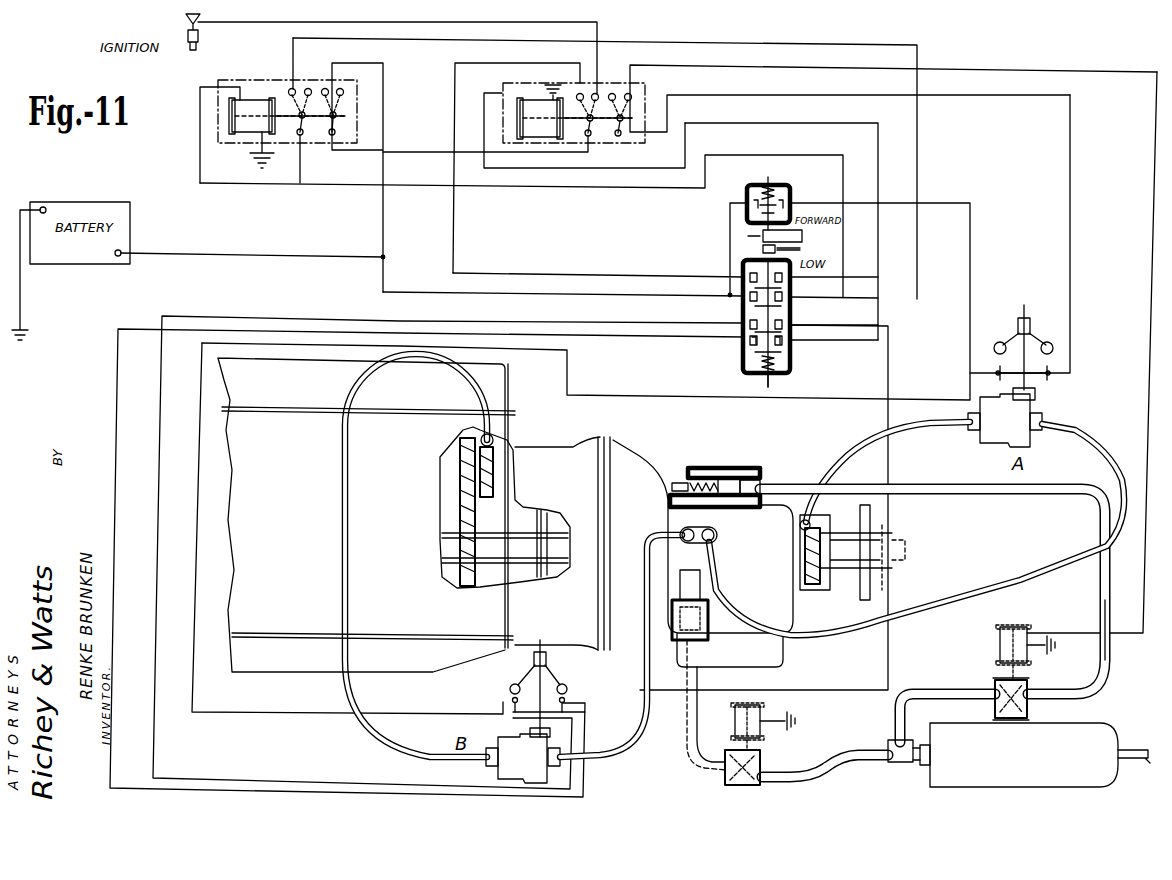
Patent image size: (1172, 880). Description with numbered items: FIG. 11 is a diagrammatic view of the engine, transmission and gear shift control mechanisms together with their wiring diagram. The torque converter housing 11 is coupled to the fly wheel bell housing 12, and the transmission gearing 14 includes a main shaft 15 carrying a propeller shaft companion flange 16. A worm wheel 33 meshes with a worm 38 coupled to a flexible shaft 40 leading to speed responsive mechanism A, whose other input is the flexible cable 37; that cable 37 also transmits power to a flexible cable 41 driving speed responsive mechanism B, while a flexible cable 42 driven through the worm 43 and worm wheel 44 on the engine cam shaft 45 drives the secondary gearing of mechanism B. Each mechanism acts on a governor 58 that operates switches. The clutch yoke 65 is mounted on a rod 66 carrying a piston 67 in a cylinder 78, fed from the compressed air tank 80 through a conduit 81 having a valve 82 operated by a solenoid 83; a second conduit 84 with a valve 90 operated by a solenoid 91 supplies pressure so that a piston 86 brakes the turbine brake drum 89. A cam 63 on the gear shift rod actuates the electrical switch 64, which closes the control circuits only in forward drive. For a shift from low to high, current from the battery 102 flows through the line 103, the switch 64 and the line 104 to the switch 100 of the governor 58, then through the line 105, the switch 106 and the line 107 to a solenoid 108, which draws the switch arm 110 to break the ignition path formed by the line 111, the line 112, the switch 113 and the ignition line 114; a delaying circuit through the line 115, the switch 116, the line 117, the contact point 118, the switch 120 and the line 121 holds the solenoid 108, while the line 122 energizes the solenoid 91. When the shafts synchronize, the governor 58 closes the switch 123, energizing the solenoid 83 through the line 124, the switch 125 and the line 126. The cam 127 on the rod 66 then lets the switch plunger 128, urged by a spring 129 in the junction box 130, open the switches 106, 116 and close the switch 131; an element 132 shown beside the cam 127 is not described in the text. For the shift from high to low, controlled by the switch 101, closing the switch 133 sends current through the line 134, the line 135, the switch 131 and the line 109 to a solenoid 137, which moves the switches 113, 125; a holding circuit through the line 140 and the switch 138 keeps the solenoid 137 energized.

The battery 102 is at (66, 202).
The line 103 is at (248, 255).
The line 104 is at (966, 262).
The line 105 is at (152, 393).
The switch 106 is at (742, 323).
The line 107 is at (648, 190).
The solenoid 108 is at (215, 130).
The line 109 is at (872, 223).
The switch arm 110 is at (342, 96).
The line 111 is at (382, 218).
The line 112 is at (394, 149).
The switch 113 is at (592, 137).
The ignition line 114 is at (600, 42).
The line 115 is at (487, 305).
The switch 116 is at (790, 300).
The line 117 is at (787, 43).
The contact point 118 is at (294, 88).
The switch 120 is at (272, 150).
The line 121 is at (300, 160).
The line 122 is at (890, 350).
The switch 123 is at (1052, 373).
The line 124 is at (1065, 208).
The switch 125 is at (632, 112).
The line 126 is at (1140, 290).
The cam 127 is at (760, 249).
The switch plunger 128 is at (772, 382).
The spring 129 is at (758, 366).
The junction box 130 is at (792, 347).
The switch 131 is at (749, 343).
The rod 132 is at (690, 482).
The switch 133 is at (566, 700).
The line 134 is at (500, 703).
The line 135 is at (112, 485).
The solenoid 137 is at (520, 100).
The switch 138 is at (724, 278).
The line 140 is at (562, 276).
The cam 63 is at (762, 234).
The electrical switch 64 is at (792, 196).
The rod 66 is at (804, 250).
The governor 58 is at (1036, 328).
The flexible shaft 40 is at (895, 435).
The worm 43 is at (497, 440).
The fly wheel bell housing 12 is at (560, 442).
The housing 11 is at (622, 456).
The yoke 65 is at (722, 466).
The cylinder 78 is at (724, 478).
The piston 67 is at (745, 470).
The transmission gearing 14 is at (790, 485).
The engine cam shaft 45 is at (455, 470).
The worm wheel 44 is at (498, 470).
The flexible cable 42 is at (350, 553).
The worm 38 is at (800, 525).
The worm wheel 33 is at (800, 549).
The main shaft 15 is at (800, 563).
The propeller shaft companion flange 16 is at (852, 597).
The flexible cable 37 is at (1025, 585).
The brake drum 89 is at (700, 572).
The piston 86 is at (674, 620).
The solenoid 83 is at (1000, 640).
The conduit 81 is at (1100, 675).
The valve 82 is at (1029, 708).
The second conduit 84 is at (828, 768).
The compressed air tank 80 is at (1000, 787).
The solenoid 91 is at (730, 700).
The valve 90 is at (726, 775).
The flexible cable 41 is at (608, 745).
The switch 100 is at (568, 708).
The switch 101 is at (512, 698).